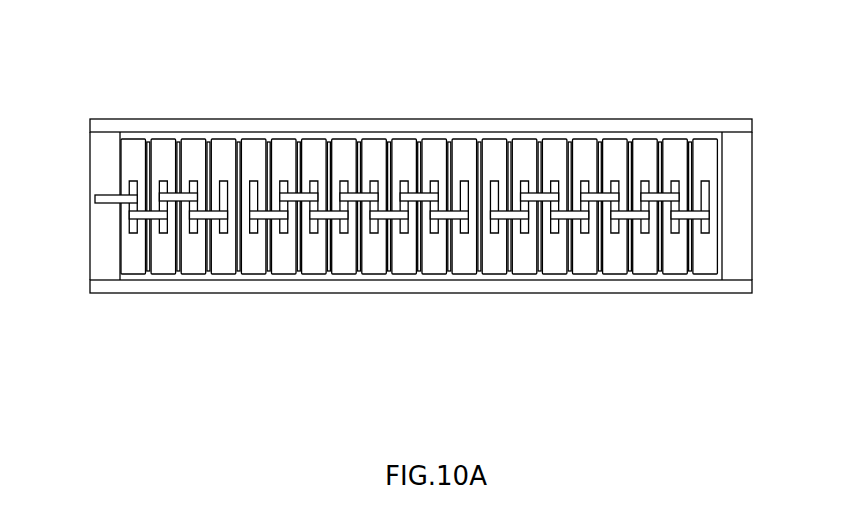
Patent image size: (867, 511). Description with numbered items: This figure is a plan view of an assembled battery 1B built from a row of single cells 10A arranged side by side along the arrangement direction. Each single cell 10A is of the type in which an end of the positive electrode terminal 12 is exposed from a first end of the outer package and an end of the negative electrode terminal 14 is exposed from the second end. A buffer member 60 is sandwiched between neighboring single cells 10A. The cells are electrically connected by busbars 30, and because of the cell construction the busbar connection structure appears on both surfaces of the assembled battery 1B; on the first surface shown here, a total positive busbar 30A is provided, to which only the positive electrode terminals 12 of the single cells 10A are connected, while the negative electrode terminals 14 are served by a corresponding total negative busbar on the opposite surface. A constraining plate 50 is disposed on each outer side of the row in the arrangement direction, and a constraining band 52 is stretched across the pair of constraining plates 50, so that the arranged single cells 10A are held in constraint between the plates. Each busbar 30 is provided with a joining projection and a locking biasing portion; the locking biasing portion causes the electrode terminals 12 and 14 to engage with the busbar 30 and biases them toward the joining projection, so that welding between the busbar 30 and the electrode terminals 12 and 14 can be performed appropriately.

The assembled battery 1B is at (90, 60).
The single cell 10A is at (674, 145).
The positive electrode terminal 12 is at (134, 181).
The negative electrode terminal 14 is at (495, 181).
The busbar 30 is at (362, 210).
The total positive busbar 30A is at (76, 214).
The constraining plate 50 is at (93, 268).
The constraining band 52 is at (468, 127).
The buffer member 60 is at (269, 142).